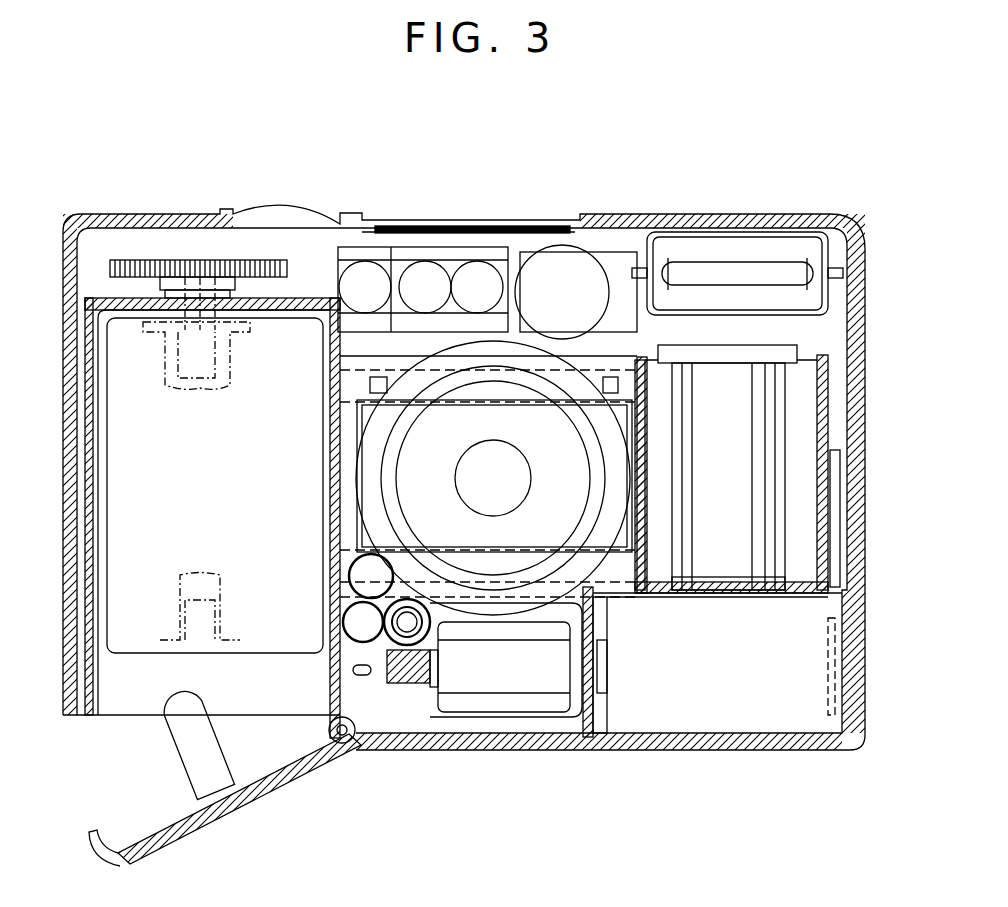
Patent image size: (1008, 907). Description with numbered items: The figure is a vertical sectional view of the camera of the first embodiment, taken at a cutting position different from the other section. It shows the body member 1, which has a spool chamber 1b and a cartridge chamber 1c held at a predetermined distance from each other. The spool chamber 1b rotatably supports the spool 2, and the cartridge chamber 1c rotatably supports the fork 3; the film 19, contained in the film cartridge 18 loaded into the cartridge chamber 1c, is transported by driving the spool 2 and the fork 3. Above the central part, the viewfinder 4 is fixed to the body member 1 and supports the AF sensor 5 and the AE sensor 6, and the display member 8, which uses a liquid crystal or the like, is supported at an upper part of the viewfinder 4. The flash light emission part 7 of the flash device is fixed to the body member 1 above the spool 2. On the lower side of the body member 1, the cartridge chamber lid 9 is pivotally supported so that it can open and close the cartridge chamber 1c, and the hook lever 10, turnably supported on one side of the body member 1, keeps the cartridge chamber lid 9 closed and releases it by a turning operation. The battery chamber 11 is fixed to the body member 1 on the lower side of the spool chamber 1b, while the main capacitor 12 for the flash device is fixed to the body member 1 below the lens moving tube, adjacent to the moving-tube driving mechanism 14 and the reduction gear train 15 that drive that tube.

The body member 1 is at (810, 590).
The spool chamber 1b is at (807, 400).
The cartridge chamber 1c is at (100, 317).
The spool 2 is at (715, 353).
The fork 3 is at (185, 265).
The viewfinder 4 is at (577, 272).
The AF sensor 5 is at (435, 253).
The AE sensor 6 is at (347, 253).
The flash light emission part 7 is at (765, 252).
The display member 8 is at (513, 228).
The cartridge chamber lid 9 is at (278, 773).
The hook lever 10 is at (85, 715).
The battery chamber 11 is at (593, 710).
The main capacitor 12 is at (512, 717).
The moving-tube driving mechanism 14 is at (470, 678).
The reduction gear train 15 is at (367, 630).
The film cartridge 18 is at (130, 645).
The film 19 is at (615, 570).